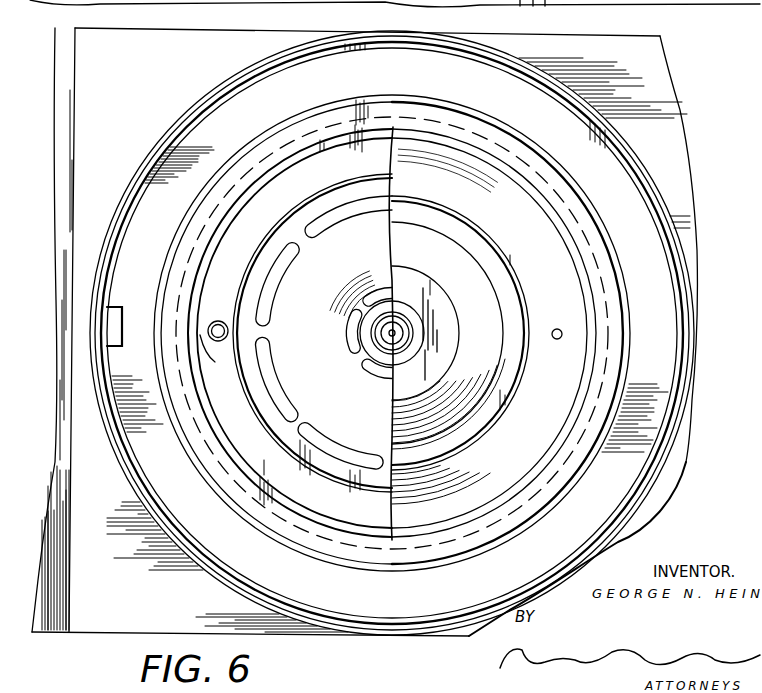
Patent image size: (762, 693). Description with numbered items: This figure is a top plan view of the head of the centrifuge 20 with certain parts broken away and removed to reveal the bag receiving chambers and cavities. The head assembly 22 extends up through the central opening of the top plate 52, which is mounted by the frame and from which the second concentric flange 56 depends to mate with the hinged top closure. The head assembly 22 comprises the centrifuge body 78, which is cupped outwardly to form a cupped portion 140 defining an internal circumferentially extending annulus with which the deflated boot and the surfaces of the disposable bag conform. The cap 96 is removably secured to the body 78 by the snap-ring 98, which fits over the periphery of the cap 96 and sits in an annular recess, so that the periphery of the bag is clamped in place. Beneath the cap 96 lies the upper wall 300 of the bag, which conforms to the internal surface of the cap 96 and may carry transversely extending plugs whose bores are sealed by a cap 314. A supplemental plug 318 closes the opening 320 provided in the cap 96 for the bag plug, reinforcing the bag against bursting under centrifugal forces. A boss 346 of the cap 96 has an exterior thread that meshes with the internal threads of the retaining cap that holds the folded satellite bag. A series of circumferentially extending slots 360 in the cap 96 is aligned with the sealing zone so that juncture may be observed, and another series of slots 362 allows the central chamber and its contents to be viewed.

The centrifuge 20 is at (34, 96).
The head assembly 22 is at (149, 152).
The top plate 52 is at (138, 614).
The second concentric flange 56 is at (140, 495).
The centrifuge body 78 is at (621, 326).
The cap 96 is at (322, 382).
The snap-ring 98 is at (190, 311).
The cupped portion 140 is at (161, 335).
The upper wall 300 is at (535, 266).
The cap 314 is at (566, 321).
The supplemental plug 318 is at (218, 322).
The opening 320 is at (220, 342).
The boss 346 is at (369, 349).
The circumferentially extending slots 360 is at (284, 272).
The slots 362 is at (385, 292).